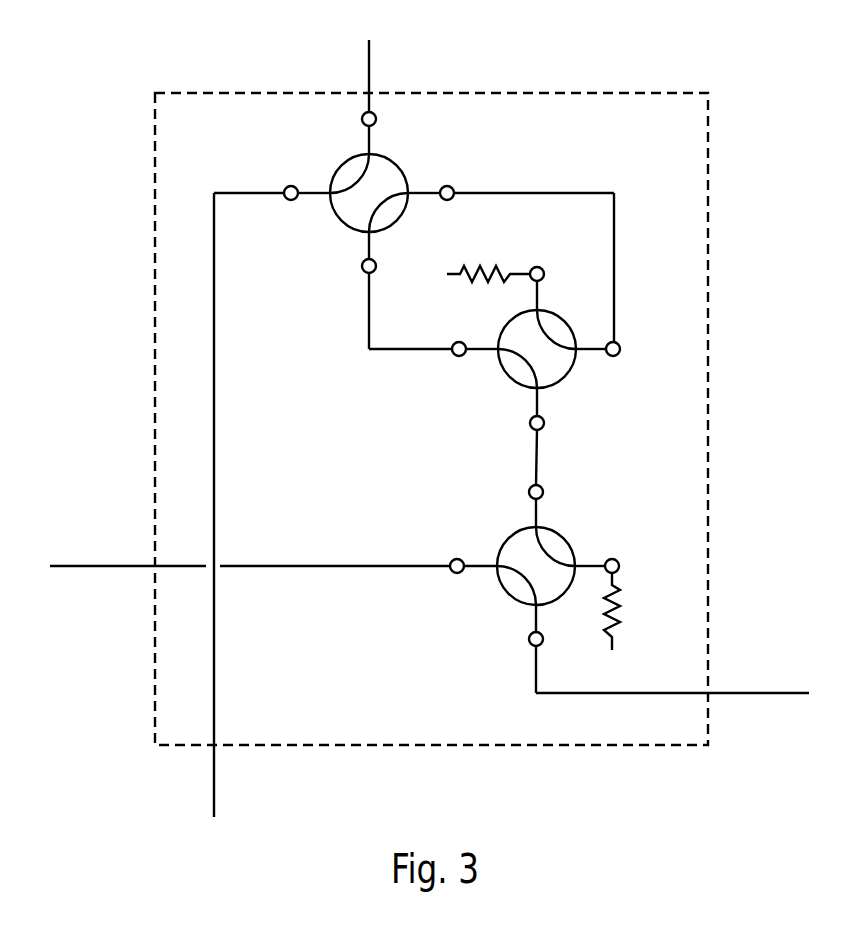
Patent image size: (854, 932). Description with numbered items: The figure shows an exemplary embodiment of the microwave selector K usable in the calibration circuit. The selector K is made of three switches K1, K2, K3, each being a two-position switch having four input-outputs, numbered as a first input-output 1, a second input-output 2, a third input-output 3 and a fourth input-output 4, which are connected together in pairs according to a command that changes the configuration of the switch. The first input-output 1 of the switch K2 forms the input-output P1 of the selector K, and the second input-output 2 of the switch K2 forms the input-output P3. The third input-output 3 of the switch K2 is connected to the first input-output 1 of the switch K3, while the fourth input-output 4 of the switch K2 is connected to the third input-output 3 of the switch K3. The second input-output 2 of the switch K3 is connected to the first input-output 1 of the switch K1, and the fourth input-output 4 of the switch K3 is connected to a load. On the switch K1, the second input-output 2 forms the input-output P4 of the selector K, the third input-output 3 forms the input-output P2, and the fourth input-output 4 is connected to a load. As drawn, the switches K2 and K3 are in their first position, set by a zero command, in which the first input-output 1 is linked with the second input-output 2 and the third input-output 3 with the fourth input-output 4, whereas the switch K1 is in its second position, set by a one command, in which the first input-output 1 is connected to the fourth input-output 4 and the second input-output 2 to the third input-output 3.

The selector K is at (597, 93).
The switch K1 is at (570, 543).
The switch K2 is at (333, 220).
The switch K3 is at (505, 373).
The input-output P1 is at (372, 60).
The input-output P2 is at (768, 690).
The input-output P3 is at (216, 775).
The input-output P4 is at (102, 562).
The first input-output 1 is at (443, 301).
The second input-output 2 is at (424, 395).
The third input-output 3 is at (501, 451).
The fourth input-output 4 is at (529, 364).